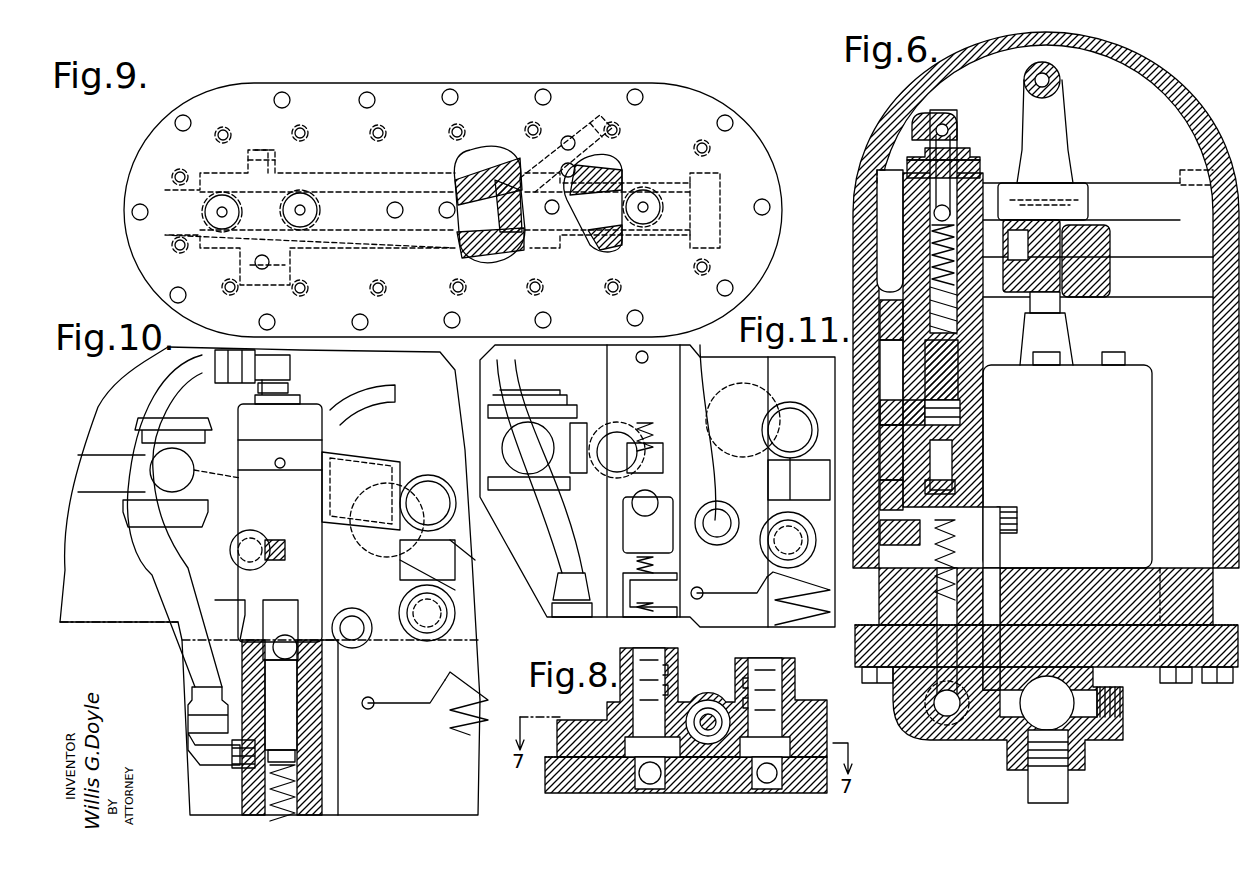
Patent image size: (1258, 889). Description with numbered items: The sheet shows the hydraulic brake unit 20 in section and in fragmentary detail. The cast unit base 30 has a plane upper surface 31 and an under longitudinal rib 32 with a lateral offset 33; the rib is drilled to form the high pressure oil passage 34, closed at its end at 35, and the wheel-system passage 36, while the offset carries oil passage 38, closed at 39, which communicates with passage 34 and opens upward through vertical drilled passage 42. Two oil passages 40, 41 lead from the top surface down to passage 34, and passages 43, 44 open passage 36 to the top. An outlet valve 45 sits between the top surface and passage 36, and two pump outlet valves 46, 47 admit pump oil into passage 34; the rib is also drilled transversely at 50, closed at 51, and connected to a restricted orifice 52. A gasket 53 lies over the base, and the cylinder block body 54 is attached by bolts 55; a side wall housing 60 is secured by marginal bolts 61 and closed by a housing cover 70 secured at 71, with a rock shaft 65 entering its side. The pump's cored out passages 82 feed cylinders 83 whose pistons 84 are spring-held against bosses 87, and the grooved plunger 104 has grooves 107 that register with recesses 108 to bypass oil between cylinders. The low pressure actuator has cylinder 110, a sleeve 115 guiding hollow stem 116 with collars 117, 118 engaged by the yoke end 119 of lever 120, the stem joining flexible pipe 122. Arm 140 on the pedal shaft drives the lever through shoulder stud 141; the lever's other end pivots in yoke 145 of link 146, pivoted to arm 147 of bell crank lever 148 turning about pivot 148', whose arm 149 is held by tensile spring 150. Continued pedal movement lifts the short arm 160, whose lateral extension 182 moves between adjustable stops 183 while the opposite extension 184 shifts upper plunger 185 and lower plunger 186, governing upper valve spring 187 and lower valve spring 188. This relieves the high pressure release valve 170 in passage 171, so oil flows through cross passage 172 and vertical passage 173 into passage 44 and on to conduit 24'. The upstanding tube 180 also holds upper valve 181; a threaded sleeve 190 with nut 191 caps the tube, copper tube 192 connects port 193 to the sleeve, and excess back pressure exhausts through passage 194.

In FIG. 6, the unit 20 is at (1140, 63).
In FIG. 6, the conduit 24' is at (1068, 766).
In FIG. 9, the unit base 30 is at (690, 86).
In FIG. 8, the unit base 30 is at (560, 780).
In FIG. 6, the unit base 30 is at (1140, 660).
In FIG. 9, the upper surface 31 is at (748, 155).
In FIG. 9, the longitudinal rib 32 is at (500, 235).
In FIG. 6, the longitudinal rib 32 is at (1095, 740).
In FIG. 9, the lateral offset 33 is at (500, 172).
In FIG. 6, the lateral offset 33 is at (970, 720).
In FIG. 9, the oil passage 34 is at (482, 213).
In FIG. 9, the closed outer end 35 is at (165, 200).
In FIG. 9, the oil passage 36 is at (600, 220).
In FIG. 6, the oil passage 36 is at (1047, 703).
In FIG. 9, the oil passage 38 is at (470, 175).
In FIG. 6, the oil passage 38 is at (945, 705).
In FIG. 9, the closed outer end 39 is at (598, 118).
In FIG. 9, the oil passage 40 is at (395, 215).
In FIG. 9, the oil passage 41 is at (447, 215).
In FIG. 9, the vertical drilled passage 42 is at (570, 140).
In FIG. 6, the vertical drilled passage 42 is at (950, 650).
In FIG. 9, the passage 43 is at (550, 212).
In FIG. 9, the passage 44 is at (572, 168).
In FIG. 6, the passage 44 is at (1000, 720).
In FIG. 9, the outlet valve 45 is at (645, 205).
In FIG. 9, the pump outlet valve 46 is at (222, 212).
In FIG. 8, the pump outlet valve 46 is at (655, 778).
In FIG. 9, the pump outlet valve 47 is at (305, 210).
In FIG. 8, the pump outlet valve 47 is at (775, 778).
In FIG. 9, the transverse passage 50 is at (275, 190).
In FIG. 9, the closed outer end 51 is at (262, 165).
In FIG. 9, the restricted orifice 52 is at (268, 262).
In FIG. 8, the gasket 53 is at (545, 755).
In FIG. 6, the gasket 53 is at (1165, 625).
In FIG. 8, the cylinder block body 54 is at (570, 735).
In FIG. 6, the cylinder block body 54 is at (1110, 600).
In FIG. 9, the bolts 55 is at (706, 262).
In FIG. 6, the side wall housing 60 is at (1222, 440).
In FIG. 6, the marginal bolts 61 is at (870, 682).
In FIG. 10, the rock shaft 65 is at (475, 560).
In FIG. 6, the housing cover 70 is at (905, 95).
In FIG. 6, the cover attachment 71 is at (1195, 165).
In FIG. 8, the cored out passages 82 is at (790, 740).
In FIG. 8, the pump cylinders 83 is at (797, 672).
In FIG. 8, the piston 84 is at (658, 652).
In FIG. 8, the bosses 87 is at (607, 706).
In FIG. 8, the grooved plunger 104 is at (708, 723).
In FIG. 8, the grooves 107 is at (708, 720).
In FIG. 8, the recesses 108 is at (683, 700).
In FIG. 10, the cylinder 110 is at (270, 581).
In FIG. 11, the cylinder 110 is at (657, 486).
In FIG. 6, the cylinder 110 is at (1140, 408).
In FIG. 10, the sleeve 115 is at (135, 527).
In FIG. 6, the sleeve 115 is at (1070, 335).
In FIG. 6, the hollow stem 116 is at (1050, 300).
In FIG. 11, the collar 117 is at (525, 473).
In FIG. 10, the collar 118 is at (173, 430).
In FIG. 11, the collar 118 is at (560, 420).
In FIG. 6, the collar 118 is at (1080, 195).
In FIG. 10, the yoke end 119 is at (172, 470).
In FIG. 11, the yoke end 119 is at (528, 448).
In FIG. 6, the yoke end 119 is at (1075, 212).
In FIG. 10, the lever 120 is at (372, 480).
In FIG. 11, the lever 120 is at (745, 415).
In FIG. 6, the lever 120 is at (1040, 235).
In FIG. 10, the flexible pipe 122 is at (362, 398).
In FIG. 11, the flexible pipe 122 is at (700, 617).
In FIG. 6, the flexible pipe 122 is at (1050, 115).
In FIG. 10, the arm 140 is at (345, 448).
In FIG. 11, the arm 140 is at (755, 355).
In FIG. 6, the arm 140 is at (1100, 278).
In FIG. 10, the shoulder stud 141 is at (250, 550).
In FIG. 11, the shoulder stud 141 is at (610, 470).
In FIG. 6, the shoulder stud 141 is at (1110, 248).
In FIG. 10, the yoke 145 is at (428, 475).
In FIG. 11, the yoke 145 is at (793, 415).
In FIG. 10, the link 146 is at (455, 575).
In FIG. 11, the link 146 is at (813, 467).
In FIG. 6, the link 146 is at (880, 470).
In FIG. 10, the arm 147 is at (440, 630).
In FIG. 11, the arm 147 is at (725, 505).
In FIG. 10, the bell crank lever 148 is at (411, 606).
In FIG. 11, the bell crank lever 148 is at (775, 548).
In FIG. 10, the pivot 148' is at (398, 647).
In FIG. 11, the pivot 148' is at (708, 432).
In FIG. 10, the arm 149 is at (392, 688).
In FIG. 11, the arm 149 is at (729, 554).
In FIG. 10, the tensile spring 150 is at (464, 721).
In FIG. 11, the tensile spring 150 is at (770, 615).
In FIG. 10, the short arm 160 is at (352, 608).
In FIG. 11, the short arm 160 is at (658, 503).
In FIG. 6, the short arm 160 is at (890, 410).
In FIG. 10, the high pressure release valve 170 is at (390, 805).
In FIG. 6, the high pressure release valve 170 is at (995, 560).
In FIG. 10, the passage 171 is at (296, 790).
In FIG. 6, the passage 171 is at (925, 545).
In FIG. 10, the cross passage 172 is at (214, 726).
In FIG. 6, the cross passage 172 is at (1017, 512).
In FIG. 6, the vertical passage 173 is at (1000, 535).
In FIG. 10, the upstanding tube 180 is at (243, 428).
In FIG. 11, the upstanding tube 180 is at (687, 486).
In FIG. 6, the upstanding tube 180 is at (970, 320).
In FIG. 6, the upper valve 181 is at (870, 215).
In FIG. 10, the lateral extension 182 is at (215, 612).
In FIG. 11, the lateral extension 182 is at (590, 520).
In FIG. 6, the lateral extension 182 is at (895, 400).
In FIG. 10, the adjustable stops 183 is at (270, 540).
In FIG. 11, the adjustable stops 183 is at (645, 423).
In FIG. 6, the adjustable stops 183 is at (890, 365).
In FIG. 6, the lateral extension 184 is at (950, 410).
In FIG. 10, the upper plunger 185 is at (268, 612).
In FIG. 6, the upper plunger 185 is at (950, 340).
In FIG. 10, the lower plunger 186 is at (280, 690).
In FIG. 11, the lower plunger 186 is at (623, 540).
In FIG. 6, the lower plunger 186 is at (945, 448).
In FIG. 6, the upper valve spring 187 is at (870, 300).
In FIG. 10, the lower valve spring 188 is at (295, 756).
In FIG. 6, the lower valve spring 188 is at (940, 482).
In FIG. 10, the threaded sleeve 190 is at (290, 365).
In FIG. 6, the threaded sleeve 190 is at (975, 178).
In FIG. 10, the nut 191 is at (300, 398).
In FIG. 6, the nut 191 is at (978, 165).
In FIG. 10, the copper tube 192 is at (170, 572).
In FIG. 11, the copper tube 192 is at (560, 500).
In FIG. 6, the copper tube 192 is at (912, 150).
In FIG. 10, the port 193 is at (232, 760).
In FIG. 6, the port 193 is at (920, 528).
In FIG. 10, the passage 194 is at (280, 458).
In FIG. 11, the passage 194 is at (629, 367).
In FIG. 6, the passage 194 is at (880, 242).